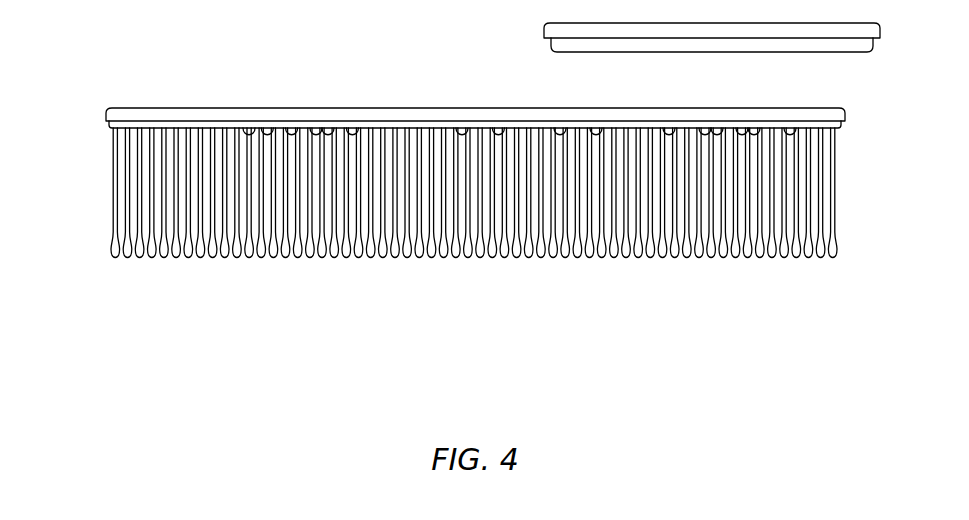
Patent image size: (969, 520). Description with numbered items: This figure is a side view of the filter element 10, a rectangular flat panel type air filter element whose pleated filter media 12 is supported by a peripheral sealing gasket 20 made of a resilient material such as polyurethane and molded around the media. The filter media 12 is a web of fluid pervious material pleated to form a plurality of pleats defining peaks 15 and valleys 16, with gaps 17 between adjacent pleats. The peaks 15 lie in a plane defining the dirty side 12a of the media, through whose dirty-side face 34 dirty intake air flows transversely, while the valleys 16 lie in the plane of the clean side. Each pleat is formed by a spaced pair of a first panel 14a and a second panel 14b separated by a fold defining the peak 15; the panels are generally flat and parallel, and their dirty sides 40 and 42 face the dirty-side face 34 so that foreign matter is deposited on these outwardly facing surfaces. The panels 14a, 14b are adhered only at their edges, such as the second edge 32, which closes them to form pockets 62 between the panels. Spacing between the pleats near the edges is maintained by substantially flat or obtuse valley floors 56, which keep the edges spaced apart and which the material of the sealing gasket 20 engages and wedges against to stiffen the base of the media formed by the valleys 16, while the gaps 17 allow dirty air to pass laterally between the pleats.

The filter element 10 is at (38, 119).
The pleated filter media 12 is at (106, 175).
The dirty side 12a is at (258, 268).
The first panel 14a is at (195, 130).
The second panel 14b is at (657, 218).
The peaks 15 is at (284, 257).
The valleys 16 is at (350, 127).
The gaps 17 is at (206, 238).
The peripheral sealing gasket 20 is at (229, 108).
The second edge 32 is at (255, 135).
The dirty-side face 34 is at (548, 270).
The dirty side of first panel 40 is at (570, 220).
The dirty side of second panel 42 is at (124, 208).
The valley floors 56 is at (495, 127).
The pockets 62 is at (140, 250).